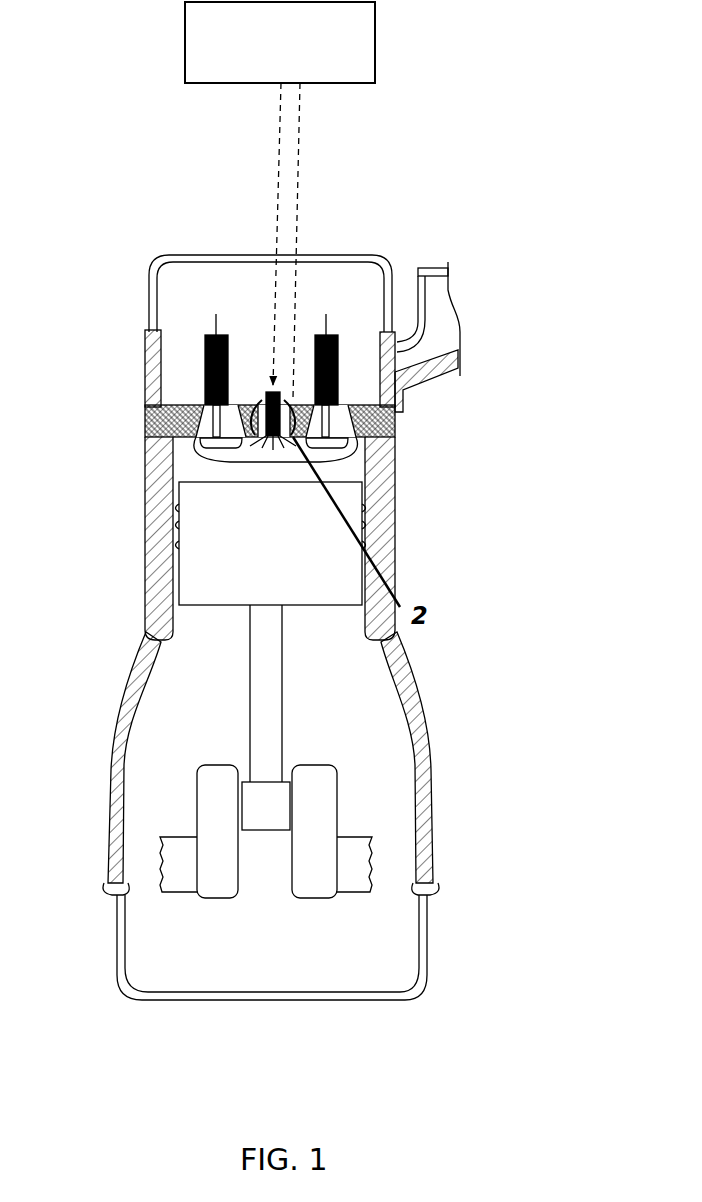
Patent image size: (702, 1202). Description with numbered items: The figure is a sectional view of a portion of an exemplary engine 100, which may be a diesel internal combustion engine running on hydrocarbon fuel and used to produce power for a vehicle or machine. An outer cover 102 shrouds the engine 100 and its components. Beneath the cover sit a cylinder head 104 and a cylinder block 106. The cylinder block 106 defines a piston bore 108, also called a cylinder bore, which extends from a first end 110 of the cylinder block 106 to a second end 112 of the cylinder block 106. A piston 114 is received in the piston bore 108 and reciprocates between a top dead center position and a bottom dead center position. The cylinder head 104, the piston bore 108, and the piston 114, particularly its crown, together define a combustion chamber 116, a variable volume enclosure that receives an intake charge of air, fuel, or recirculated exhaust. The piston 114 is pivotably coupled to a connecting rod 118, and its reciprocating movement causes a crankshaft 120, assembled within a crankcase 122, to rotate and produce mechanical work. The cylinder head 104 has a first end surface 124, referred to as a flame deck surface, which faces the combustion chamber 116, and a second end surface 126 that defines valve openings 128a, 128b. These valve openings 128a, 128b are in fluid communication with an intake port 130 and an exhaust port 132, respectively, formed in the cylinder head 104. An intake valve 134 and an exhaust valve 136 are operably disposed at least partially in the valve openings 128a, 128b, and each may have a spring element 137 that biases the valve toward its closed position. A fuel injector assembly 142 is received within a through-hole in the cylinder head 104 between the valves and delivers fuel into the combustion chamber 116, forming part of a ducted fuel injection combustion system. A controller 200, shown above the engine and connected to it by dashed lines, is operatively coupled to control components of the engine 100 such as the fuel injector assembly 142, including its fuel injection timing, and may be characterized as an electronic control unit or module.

The engine 100 is at (492, 188).
The outer cover 102 is at (140, 263).
The cylinder head 104 is at (395, 425).
The cylinder block 106 is at (385, 555).
The piston bore 108 is at (183, 480).
The first end 110 is at (142, 435).
The second end 112 is at (137, 622).
The piston 114 is at (282, 551).
The combustion chamber 116 is at (340, 470).
The connecting rod 118 is at (268, 718).
The crankshaft 120 is at (315, 805).
The crankcase 122 is at (427, 955).
The first end surface 124 is at (385, 437).
The second end surface 126 is at (178, 405).
The valve opening 128a is at (200, 452).
The valve opening 128b is at (345, 458).
The intake port 130 is at (190, 445).
The exhaust port 132 is at (289, 400).
The intake valve 134 is at (245, 402).
The exhaust valve 136 is at (358, 402).
The spring element 137 is at (224, 326).
The fuel injector assembly 142 is at (272, 300).
The controller 200 is at (308, 58).